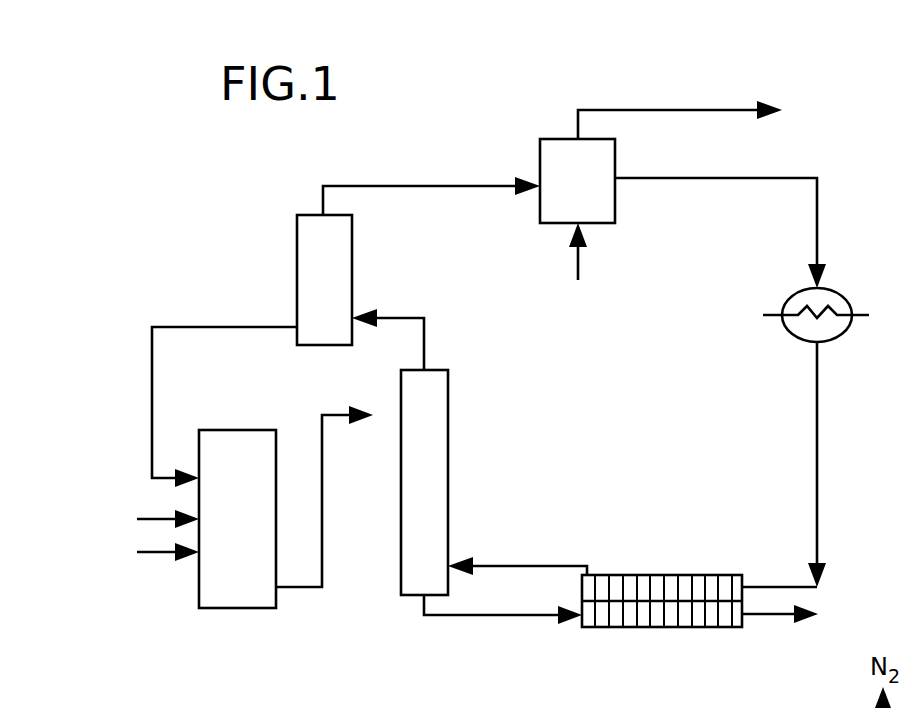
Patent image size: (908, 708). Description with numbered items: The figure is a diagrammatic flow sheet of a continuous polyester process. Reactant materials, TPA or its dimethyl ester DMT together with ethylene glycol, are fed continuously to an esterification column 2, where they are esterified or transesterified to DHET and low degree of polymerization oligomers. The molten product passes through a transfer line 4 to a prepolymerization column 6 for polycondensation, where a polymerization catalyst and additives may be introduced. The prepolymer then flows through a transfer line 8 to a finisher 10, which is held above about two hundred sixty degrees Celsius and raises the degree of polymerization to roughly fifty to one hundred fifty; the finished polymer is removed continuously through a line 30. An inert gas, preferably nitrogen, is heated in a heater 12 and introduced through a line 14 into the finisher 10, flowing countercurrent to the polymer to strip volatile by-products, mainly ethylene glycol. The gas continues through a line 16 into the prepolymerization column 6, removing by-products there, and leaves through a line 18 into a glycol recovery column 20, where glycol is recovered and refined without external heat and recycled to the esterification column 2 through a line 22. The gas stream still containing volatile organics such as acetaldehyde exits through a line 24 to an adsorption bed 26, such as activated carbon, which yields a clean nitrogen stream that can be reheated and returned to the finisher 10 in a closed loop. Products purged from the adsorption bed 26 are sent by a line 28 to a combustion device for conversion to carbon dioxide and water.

The esterification column 2 is at (228, 430).
The transfer line 4 is at (330, 415).
The prepolymerization column 6 is at (448, 448).
The transfer line 8 is at (500, 615).
The finisher 10 is at (695, 575).
The heater 12 is at (835, 297).
The line 14 is at (818, 471).
The line 16 is at (555, 565).
The line 18 is at (427, 344).
The glycol recovery column 20 is at (297, 215).
The line 22 is at (248, 327).
The line 24 is at (430, 186).
The adsorption bed 26 is at (558, 139).
The line 28 is at (655, 110).
The line 30 is at (765, 616).